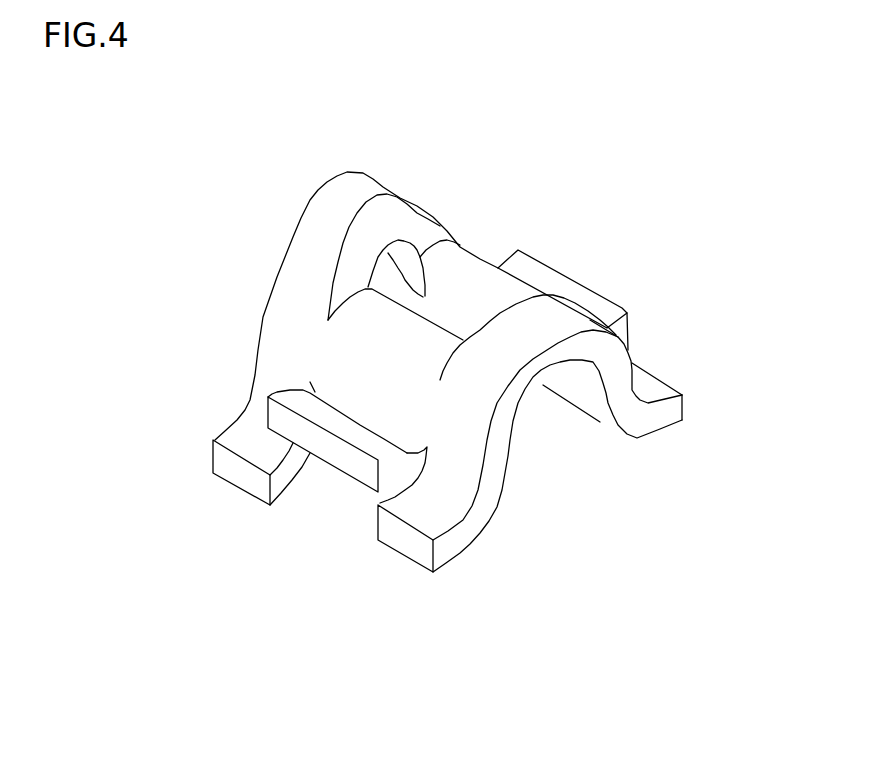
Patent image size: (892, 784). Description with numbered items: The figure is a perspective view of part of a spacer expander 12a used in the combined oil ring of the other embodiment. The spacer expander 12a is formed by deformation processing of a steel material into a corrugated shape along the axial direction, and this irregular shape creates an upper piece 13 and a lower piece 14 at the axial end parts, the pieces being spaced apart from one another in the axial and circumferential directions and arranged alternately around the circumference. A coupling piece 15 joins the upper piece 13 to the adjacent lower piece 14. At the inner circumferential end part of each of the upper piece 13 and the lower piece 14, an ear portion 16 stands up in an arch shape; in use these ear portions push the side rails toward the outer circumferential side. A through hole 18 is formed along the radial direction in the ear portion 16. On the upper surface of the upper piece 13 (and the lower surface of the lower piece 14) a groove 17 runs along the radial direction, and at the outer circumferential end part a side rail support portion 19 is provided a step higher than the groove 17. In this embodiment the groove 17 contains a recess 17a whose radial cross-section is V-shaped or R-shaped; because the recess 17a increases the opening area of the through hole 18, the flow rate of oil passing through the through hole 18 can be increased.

The spacer expander 12a is at (441, 363).
The upper piece 13 is at (616, 452).
The lower piece 14 is at (445, 590).
The coupling piece 15 is at (557, 447).
The ear portion 16 is at (355, 294).
The groove 17 is at (294, 411).
The recess 17a is at (375, 344).
The through hole 18 is at (430, 223).
The side rail support portion 19 is at (569, 282).